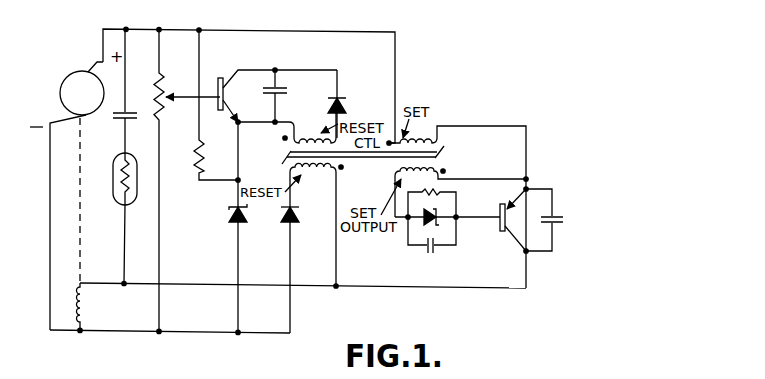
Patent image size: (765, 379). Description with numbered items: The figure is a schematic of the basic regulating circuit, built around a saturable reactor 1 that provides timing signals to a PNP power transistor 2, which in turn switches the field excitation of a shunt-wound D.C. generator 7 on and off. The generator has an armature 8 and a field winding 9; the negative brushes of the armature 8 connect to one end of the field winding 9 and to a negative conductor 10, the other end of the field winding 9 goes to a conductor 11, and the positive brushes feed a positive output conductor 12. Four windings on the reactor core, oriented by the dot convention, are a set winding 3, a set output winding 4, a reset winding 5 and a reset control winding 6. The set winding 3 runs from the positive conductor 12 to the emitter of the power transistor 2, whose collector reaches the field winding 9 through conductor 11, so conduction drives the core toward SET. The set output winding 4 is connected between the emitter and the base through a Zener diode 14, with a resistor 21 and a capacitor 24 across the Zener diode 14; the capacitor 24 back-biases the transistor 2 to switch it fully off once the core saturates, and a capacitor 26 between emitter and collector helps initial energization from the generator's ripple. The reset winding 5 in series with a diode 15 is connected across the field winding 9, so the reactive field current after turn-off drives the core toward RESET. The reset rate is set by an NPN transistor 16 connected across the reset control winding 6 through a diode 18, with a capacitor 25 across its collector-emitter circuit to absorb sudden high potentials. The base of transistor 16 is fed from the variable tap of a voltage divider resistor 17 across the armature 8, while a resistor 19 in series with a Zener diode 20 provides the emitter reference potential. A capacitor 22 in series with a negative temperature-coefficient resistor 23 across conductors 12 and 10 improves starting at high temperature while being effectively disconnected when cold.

The saturable reactor 1 is at (448, 155).
The power transistor 2 is at (500, 233).
The set winding 3 is at (437, 134).
The set output winding 4 is at (460, 192).
The reset winding 5 is at (325, 170).
The reset control winding 6 is at (301, 136).
The shunt-wound D.C. generator 7 is at (73, 178).
The armature 8 is at (72, 70).
The field winding 9 is at (85, 298).
The negative conductor 10 is at (205, 334).
The conductor 11 is at (194, 284).
The positive output conductor 12 is at (230, 30).
The Zener diode 14 is at (424, 208).
The semiconductor diode 15 is at (299, 217).
The transistor 16 is at (270, 197).
The voltage divider resistor 17 is at (163, 85).
The semiconductor diode 18 is at (346, 110).
The resistor 19 is at (203, 147).
The Zener diode 20 is at (248, 217).
The resistor 21 is at (441, 191).
The capacitor 22 is at (130, 110).
The negative temperature-coefficient resistor 23 is at (137, 197).
The capacitor 24 is at (425, 250).
The capacitor 25 is at (289, 86).
The capacitor 26 is at (557, 214).